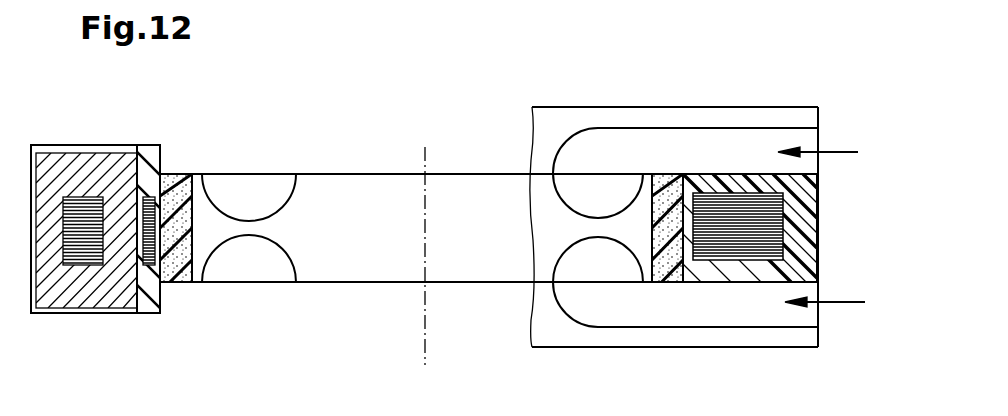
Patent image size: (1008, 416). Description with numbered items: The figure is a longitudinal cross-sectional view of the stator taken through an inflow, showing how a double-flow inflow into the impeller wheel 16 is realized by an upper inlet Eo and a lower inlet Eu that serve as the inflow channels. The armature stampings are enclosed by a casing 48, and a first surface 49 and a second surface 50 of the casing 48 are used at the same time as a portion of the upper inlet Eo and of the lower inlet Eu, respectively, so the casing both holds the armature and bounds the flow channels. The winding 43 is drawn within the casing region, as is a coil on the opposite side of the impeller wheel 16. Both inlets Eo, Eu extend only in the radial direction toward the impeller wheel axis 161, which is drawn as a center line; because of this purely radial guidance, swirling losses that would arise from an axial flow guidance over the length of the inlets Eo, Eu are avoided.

The impeller wheel 16 is at (362, 183).
The impeller wheel axis 161 is at (443, 271).
The coil winding 43 is at (718, 207).
The casing 48 is at (705, 282).
The first surface 49 is at (742, 172).
The second surface 50 is at (768, 280).
The upper inlet Eo is at (663, 140).
The lower inlet Eu is at (738, 312).